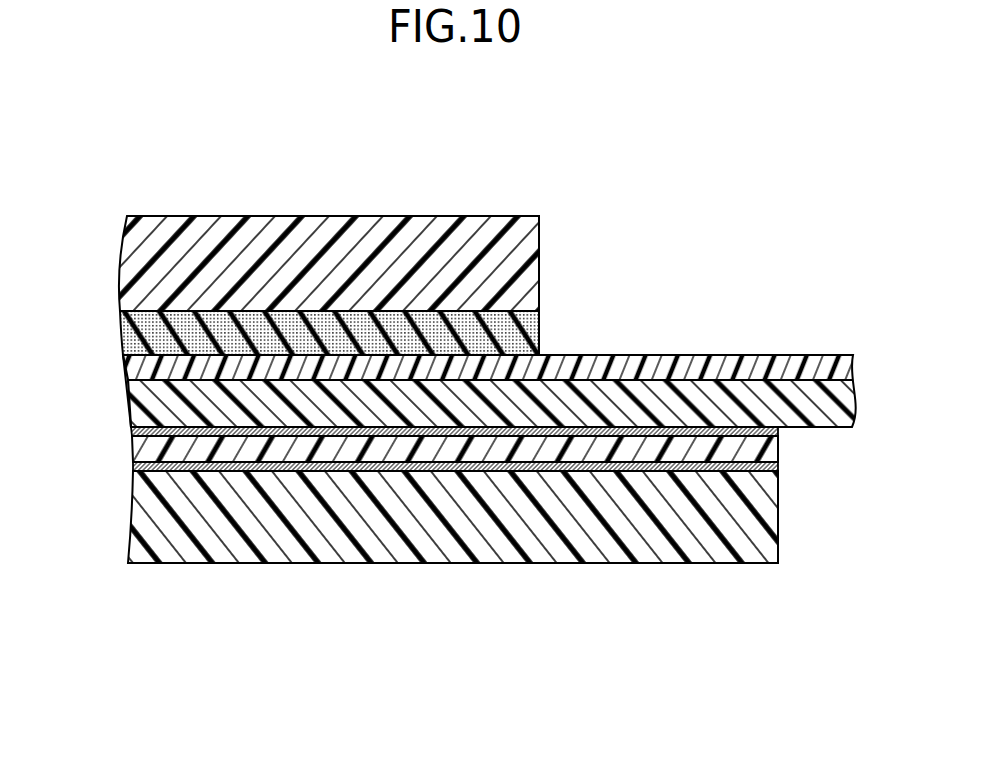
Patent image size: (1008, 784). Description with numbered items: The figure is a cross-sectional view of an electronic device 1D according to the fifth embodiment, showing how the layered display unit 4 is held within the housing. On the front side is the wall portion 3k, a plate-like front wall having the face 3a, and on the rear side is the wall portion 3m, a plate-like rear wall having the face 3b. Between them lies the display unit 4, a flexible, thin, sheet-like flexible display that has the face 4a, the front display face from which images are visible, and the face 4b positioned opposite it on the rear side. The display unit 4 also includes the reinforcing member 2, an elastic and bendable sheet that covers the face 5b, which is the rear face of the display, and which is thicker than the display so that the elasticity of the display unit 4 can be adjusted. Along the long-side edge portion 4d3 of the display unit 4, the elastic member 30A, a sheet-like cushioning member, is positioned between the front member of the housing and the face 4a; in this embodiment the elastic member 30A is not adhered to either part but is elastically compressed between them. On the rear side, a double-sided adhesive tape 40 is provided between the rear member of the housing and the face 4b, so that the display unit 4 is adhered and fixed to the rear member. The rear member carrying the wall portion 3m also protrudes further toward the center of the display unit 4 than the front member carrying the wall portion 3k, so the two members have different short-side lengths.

The electronic device 1D is at (665, 201).
The face 3a is at (340, 216).
The wall portion 3k is at (174, 207).
The elastic member 30A is at (556, 332).
The display unit 4 is at (816, 347).
The face 4a is at (735, 355).
The face 4b is at (843, 425).
The face 5b is at (838, 381).
The edge portion 4d3 is at (112, 371).
The reinforcing member 2 is at (820, 440).
The double-sided adhesive tape 40 is at (789, 461).
The face 3b is at (338, 565).
The wall portion 3m is at (172, 578).